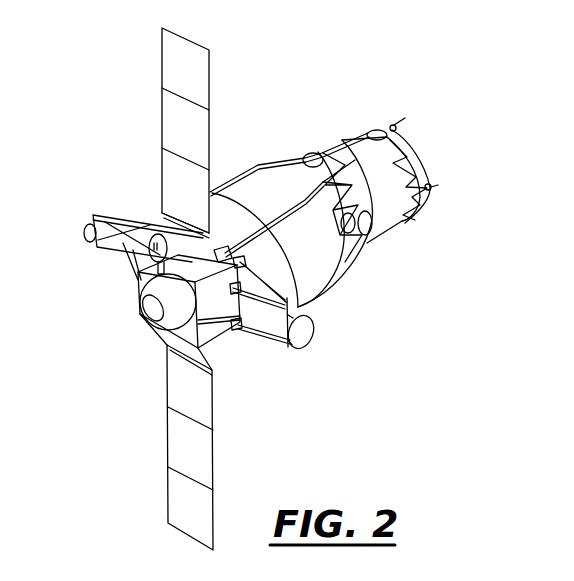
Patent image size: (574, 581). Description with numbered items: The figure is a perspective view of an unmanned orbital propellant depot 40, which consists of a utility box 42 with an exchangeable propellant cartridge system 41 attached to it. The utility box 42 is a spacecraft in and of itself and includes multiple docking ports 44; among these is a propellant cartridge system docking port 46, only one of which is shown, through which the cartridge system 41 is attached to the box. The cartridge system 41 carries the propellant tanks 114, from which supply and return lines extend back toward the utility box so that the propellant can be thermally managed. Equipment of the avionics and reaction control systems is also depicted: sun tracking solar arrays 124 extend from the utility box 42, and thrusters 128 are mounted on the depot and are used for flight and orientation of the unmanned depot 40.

The unmanned orbital propellant depot 40 is at (412, 278).
The exchangeable propellant cartridge system 41 is at (313, 302).
The utility box 42 is at (227, 338).
The docking ports 44 is at (93, 226).
The propellant cartridge system docking port 46 is at (222, 257).
The propellant tanks 114 is at (245, 165).
The sun tracking solar arrays 124 is at (210, 85).
The thrusters 128 is at (396, 128).